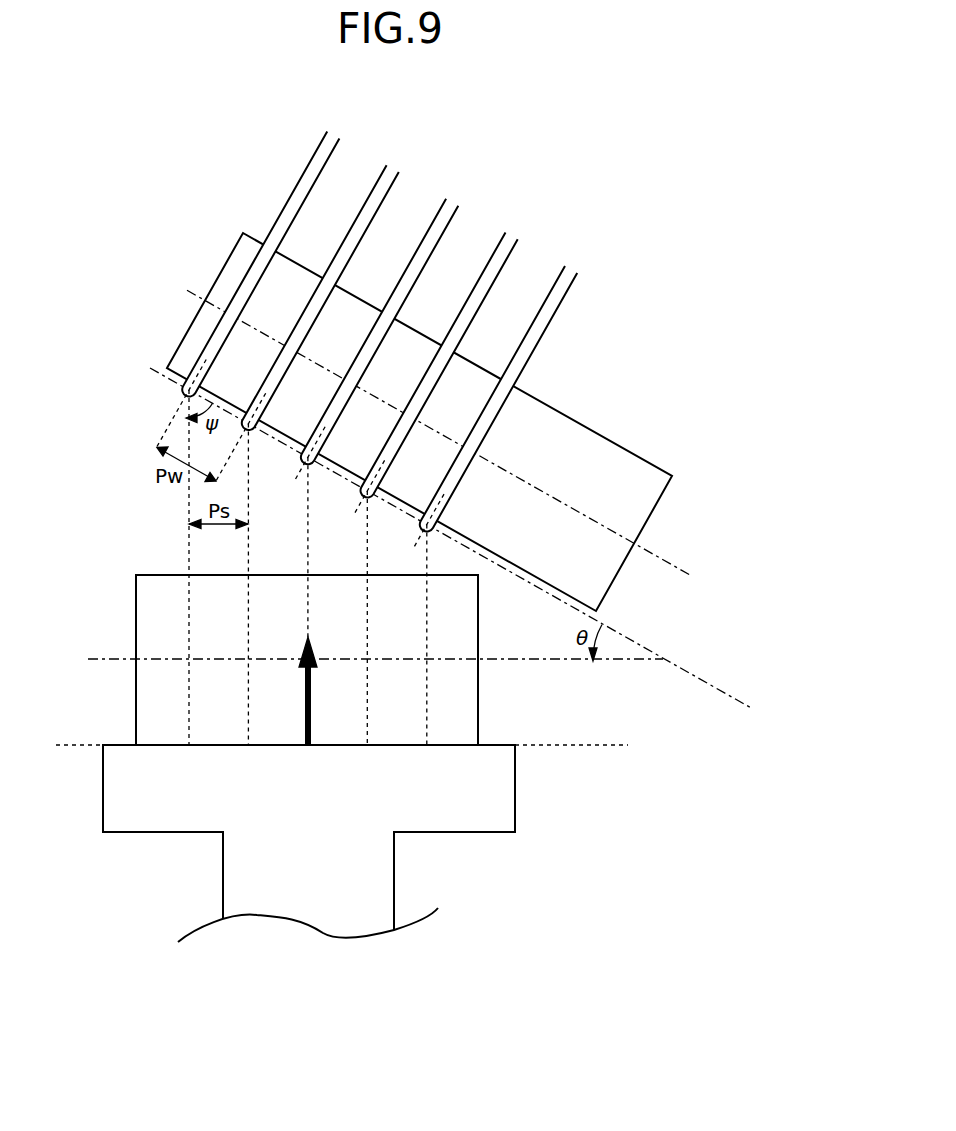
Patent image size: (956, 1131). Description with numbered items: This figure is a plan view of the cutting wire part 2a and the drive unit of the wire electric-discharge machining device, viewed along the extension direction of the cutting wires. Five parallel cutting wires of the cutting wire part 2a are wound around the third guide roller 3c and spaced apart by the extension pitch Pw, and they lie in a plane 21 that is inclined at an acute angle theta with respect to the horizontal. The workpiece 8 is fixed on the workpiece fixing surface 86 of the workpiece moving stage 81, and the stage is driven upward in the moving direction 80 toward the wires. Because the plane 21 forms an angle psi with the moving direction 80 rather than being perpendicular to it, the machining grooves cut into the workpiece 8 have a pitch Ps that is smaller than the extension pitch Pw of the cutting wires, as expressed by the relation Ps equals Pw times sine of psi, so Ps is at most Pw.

The cutting wire part 2a is at (379, 426).
The third guide roller 3c is at (592, 447).
The plane including the cutting wires 21 is at (640, 646).
The workpiece 8 is at (136, 598).
The moving direction 80 is at (305, 703).
The workpiece moving stage 81 is at (233, 876).
The workpiece fixing surface 86 is at (605, 743).